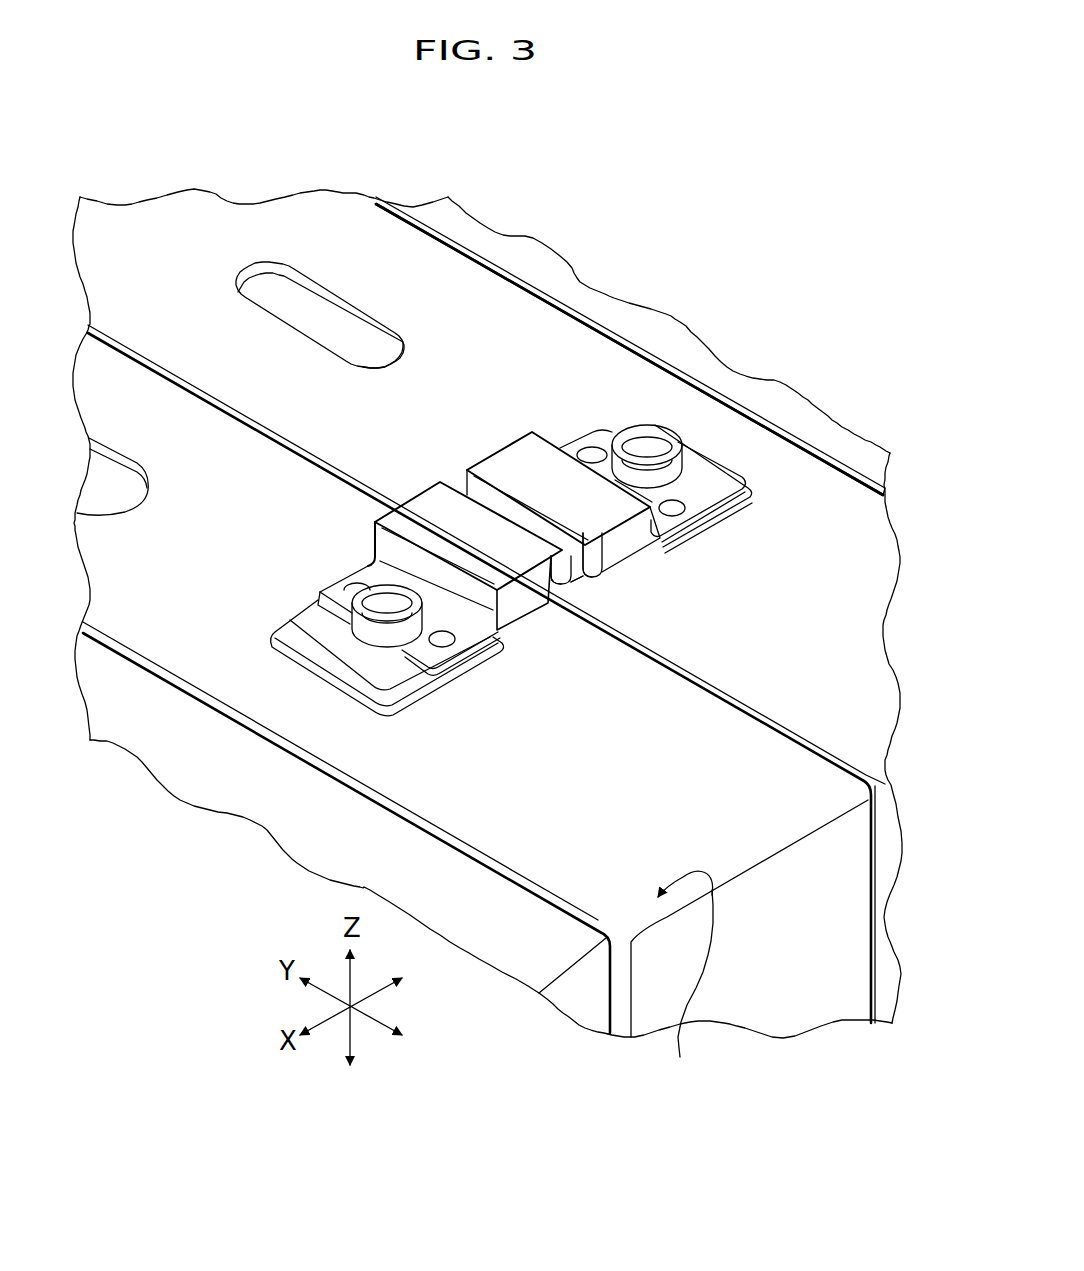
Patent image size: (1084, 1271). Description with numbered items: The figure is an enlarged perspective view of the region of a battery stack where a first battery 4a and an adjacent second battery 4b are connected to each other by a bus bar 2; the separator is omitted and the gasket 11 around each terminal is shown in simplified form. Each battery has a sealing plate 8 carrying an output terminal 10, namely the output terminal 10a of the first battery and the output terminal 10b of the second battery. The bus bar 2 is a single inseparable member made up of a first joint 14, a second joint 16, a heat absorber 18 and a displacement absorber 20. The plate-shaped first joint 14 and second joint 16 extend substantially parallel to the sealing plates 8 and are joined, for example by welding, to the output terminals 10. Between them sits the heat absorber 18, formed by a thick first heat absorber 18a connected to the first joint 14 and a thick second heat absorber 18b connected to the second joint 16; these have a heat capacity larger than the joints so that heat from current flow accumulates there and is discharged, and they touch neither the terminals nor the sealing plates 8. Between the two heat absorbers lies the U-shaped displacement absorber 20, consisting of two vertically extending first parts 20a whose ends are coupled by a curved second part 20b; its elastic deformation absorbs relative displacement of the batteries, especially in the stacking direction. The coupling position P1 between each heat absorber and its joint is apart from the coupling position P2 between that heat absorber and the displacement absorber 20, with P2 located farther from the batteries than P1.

The bus bar 2 is at (503, 521).
The first battery 4a is at (475, 853).
The second battery 4b is at (831, 494).
The sealing plate 8 is at (500, 637).
The output terminal 10 is at (458, 514).
The output terminal of first battery 10a is at (388, 640).
The output terminal of second battery 10b is at (645, 424).
The gasket 11 is at (745, 485).
The first joint 14 is at (328, 592).
The second joint 16 is at (590, 447).
The heat absorber 18 is at (600, 583).
The first heat absorber 18a is at (523, 600).
The second heat absorber 18b is at (637, 538).
The displacement absorber 20 is at (678, 607).
The first part 20a is at (598, 553).
The second part 20b is at (583, 587).
The coupling position P1 is at (367, 562).
The coupling position P2 is at (462, 480).